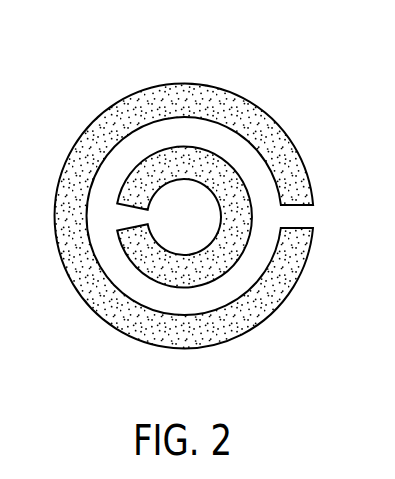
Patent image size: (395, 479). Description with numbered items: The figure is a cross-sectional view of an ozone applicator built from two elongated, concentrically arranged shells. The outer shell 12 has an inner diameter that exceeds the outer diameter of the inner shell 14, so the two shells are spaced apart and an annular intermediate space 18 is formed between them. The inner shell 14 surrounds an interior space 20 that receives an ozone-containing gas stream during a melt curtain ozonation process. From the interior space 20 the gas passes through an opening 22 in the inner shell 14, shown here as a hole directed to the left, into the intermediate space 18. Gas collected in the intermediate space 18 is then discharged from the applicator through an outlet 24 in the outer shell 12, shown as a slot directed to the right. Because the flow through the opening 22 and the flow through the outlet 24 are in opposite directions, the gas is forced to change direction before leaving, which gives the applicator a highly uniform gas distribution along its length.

The outer shell 12 is at (183, 335).
The inner shell 14 is at (149, 262).
The intermediate space 18 is at (253, 262).
The interior space 20 is at (183, 211).
The opening 22 is at (128, 215).
The outlet 24 is at (302, 217).